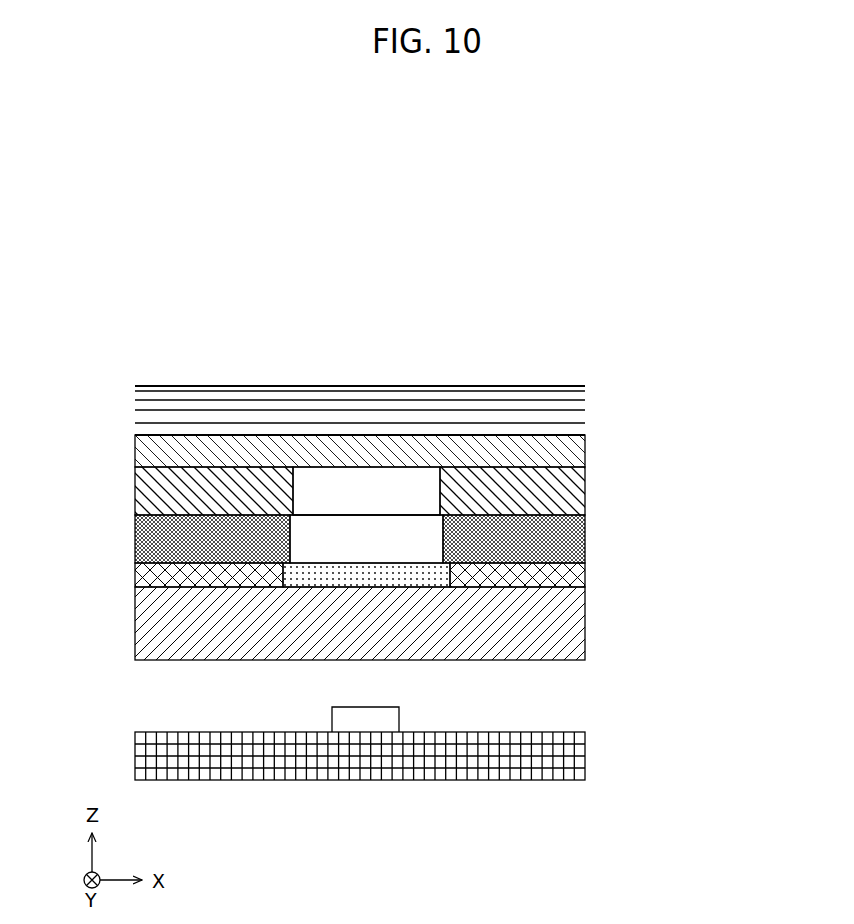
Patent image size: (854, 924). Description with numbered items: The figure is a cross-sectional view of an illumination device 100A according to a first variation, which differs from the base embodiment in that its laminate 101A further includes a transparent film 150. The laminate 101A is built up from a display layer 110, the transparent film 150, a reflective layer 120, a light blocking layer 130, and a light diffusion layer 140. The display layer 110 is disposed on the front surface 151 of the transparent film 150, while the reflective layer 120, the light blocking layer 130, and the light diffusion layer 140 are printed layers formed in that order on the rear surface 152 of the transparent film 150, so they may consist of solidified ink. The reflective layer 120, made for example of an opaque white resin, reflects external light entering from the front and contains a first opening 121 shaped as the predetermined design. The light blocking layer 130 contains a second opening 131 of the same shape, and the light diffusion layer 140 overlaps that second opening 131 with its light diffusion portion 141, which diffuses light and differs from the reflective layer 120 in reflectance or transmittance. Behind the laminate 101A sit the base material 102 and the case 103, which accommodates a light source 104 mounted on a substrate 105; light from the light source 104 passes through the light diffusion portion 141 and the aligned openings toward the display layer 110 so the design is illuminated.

The illumination device 100A is at (632, 317).
The laminate 101A is at (461, 490).
The display layer 110 is at (585, 409).
The transparent film 150 is at (585, 450).
The reflective layer 120 is at (585, 495).
The light blocking layer 130 is at (585, 538).
The light diffusion layer 140 is at (418, 579).
The first opening 121 is at (307, 480).
The front surface 151 is at (365, 431).
The rear surface 152 is at (367, 471).
The second opening 131 is at (307, 547).
The light diffusion portion 141 is at (400, 575).
The base material 102 is at (580, 623).
The case 103 is at (563, 690).
The light source 104 is at (399, 718).
The substrate 105 is at (585, 757).